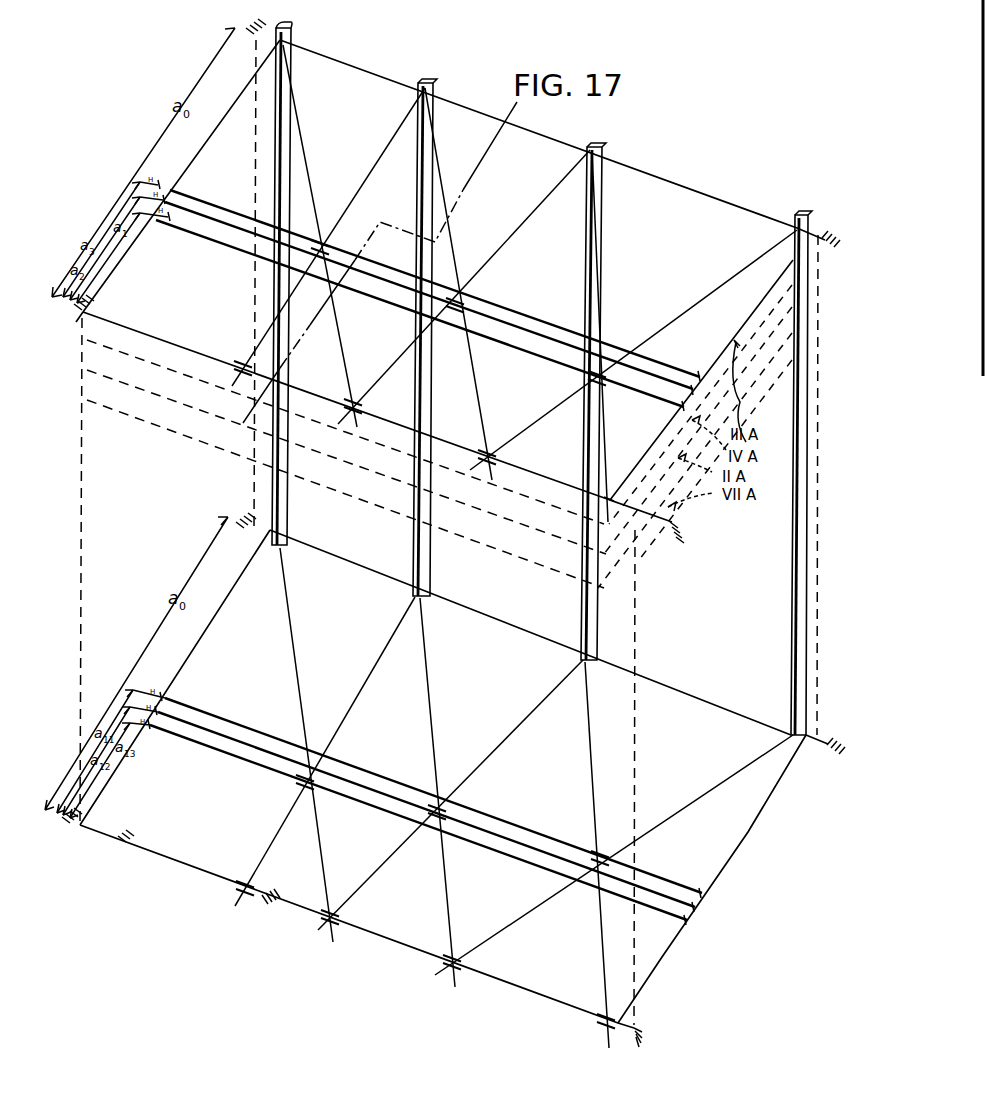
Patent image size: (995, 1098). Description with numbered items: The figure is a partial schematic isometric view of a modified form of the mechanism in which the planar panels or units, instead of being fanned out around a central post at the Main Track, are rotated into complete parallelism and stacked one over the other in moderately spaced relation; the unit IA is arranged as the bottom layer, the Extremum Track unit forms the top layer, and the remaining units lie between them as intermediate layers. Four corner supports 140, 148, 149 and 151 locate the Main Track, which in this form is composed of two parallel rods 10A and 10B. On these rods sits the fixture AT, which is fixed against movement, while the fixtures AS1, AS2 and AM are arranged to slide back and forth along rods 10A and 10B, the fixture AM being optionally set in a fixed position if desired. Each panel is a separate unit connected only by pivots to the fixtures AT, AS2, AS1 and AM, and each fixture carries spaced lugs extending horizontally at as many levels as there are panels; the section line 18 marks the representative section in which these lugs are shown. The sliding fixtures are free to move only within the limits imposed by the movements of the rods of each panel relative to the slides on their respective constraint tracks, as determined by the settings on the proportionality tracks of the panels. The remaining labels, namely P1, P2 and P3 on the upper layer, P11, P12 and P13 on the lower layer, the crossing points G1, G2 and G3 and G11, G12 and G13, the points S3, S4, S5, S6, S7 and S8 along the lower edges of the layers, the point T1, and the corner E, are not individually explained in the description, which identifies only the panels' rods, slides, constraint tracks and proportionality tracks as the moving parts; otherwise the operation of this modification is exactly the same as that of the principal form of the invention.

The parallel rod of the Main Track 10B is at (687, 188).
The parallel rod of the Main Track 10A is at (708, 699).
The sliding fixture AM is at (291, 124).
The sliding fixture AS1 is at (432, 184).
The sliding fixture AS2 is at (602, 242).
The fixed fixture AT is at (792, 576).
The corner support 140 is at (816, 508).
The corner support 148 is at (638, 756).
The corner support 149 is at (254, 299).
The corner support 151 is at (80, 522).
The section line 18 is at (496, 109).
The purlin P1 is at (535, 344).
The purlin P2 is at (507, 324).
The purlin P3 is at (484, 308).
The purlin P11 is at (482, 822).
The purlin P12 is at (512, 840).
The purlin P13 is at (544, 858).
The brace-purlin joint G1 is at (600, 384).
The brace-purlin joint G2 is at (454, 314).
The brace-purlin joint G3 is at (328, 248).
The brace-purlin joint G11 is at (602, 855).
The brace-purlin joint G12 is at (436, 816).
The brace-purlin joint G13 is at (300, 788).
The brace anchor S3 is at (254, 888).
The brace anchor S4 is at (336, 919).
The brace anchor S5 is at (458, 965).
The brace anchor S6 is at (240, 362).
The brace anchor S7 is at (348, 400).
The brace anchor S8 is at (499, 456).
The brace anchor T1 is at (598, 1024).
The frame corner E is at (612, 498).
The panel unit IA is at (759, 836).